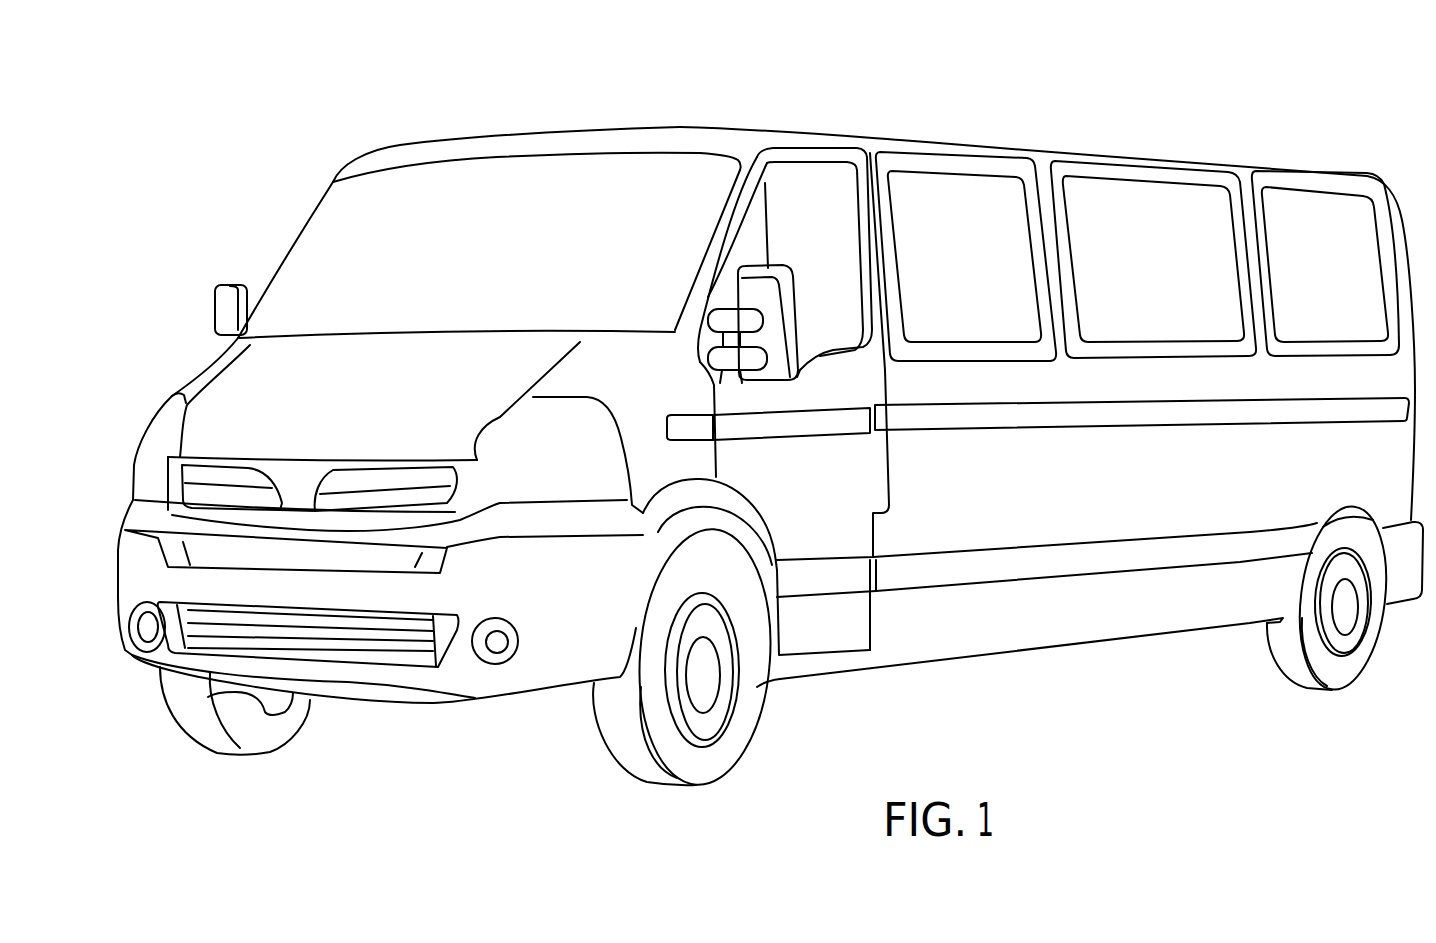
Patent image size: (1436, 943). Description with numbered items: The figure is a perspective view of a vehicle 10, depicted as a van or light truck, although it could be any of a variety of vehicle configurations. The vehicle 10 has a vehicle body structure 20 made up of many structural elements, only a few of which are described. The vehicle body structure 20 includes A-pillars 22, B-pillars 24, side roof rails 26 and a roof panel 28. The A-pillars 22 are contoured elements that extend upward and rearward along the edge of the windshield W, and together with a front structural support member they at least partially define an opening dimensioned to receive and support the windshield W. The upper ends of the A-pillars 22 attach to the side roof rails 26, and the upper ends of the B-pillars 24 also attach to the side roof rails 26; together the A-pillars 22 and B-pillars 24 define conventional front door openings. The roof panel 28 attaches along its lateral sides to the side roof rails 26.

The vehicle 10 is at (832, 100).
The vehicle body structure 20 is at (514, 108).
The A-pillars 22 is at (720, 230).
The B-pillars 24 is at (884, 237).
The side roof rails 26 is at (979, 157).
The roof panel 28 is at (673, 130).
The windshield W is at (350, 247).